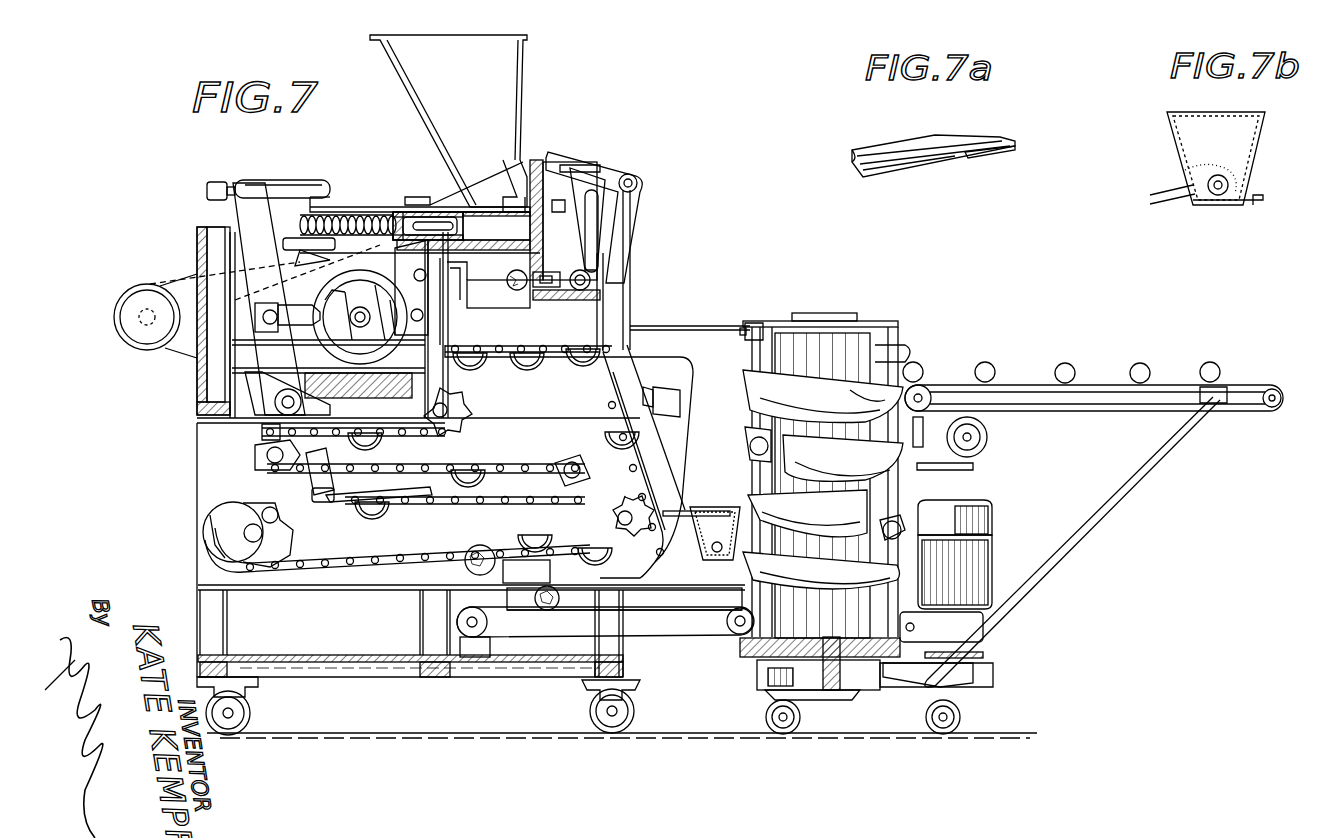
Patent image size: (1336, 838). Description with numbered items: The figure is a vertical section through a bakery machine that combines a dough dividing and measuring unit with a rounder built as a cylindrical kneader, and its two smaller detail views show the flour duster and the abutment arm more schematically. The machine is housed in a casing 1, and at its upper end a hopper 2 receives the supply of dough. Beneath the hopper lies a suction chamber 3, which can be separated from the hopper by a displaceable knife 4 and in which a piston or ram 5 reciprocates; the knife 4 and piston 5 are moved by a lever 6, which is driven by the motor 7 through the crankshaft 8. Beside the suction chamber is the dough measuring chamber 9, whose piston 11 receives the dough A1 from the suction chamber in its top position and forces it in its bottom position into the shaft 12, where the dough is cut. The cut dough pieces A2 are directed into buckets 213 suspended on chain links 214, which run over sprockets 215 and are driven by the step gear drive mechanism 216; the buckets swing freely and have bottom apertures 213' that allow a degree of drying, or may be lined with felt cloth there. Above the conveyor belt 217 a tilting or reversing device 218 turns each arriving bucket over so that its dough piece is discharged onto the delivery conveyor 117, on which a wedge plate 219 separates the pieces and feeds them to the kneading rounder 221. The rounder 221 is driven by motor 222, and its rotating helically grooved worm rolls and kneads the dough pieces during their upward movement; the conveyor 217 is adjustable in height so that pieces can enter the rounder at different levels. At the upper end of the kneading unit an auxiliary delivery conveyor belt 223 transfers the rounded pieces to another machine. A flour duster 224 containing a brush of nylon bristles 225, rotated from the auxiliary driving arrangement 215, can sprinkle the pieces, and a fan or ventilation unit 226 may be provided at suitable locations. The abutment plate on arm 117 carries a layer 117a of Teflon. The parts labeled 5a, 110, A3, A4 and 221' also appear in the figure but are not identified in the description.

In FIG. 7, the casing 1 is at (210, 248).
In FIG. 7, the hopper 2 is at (408, 94).
In FIG. 7, the suction chamber 3 is at (443, 202).
In FIG. 7, the displaceable knife 4 is at (363, 207).
In FIG. 7, the piston or ram 5 is at (417, 210).
In FIG. 7, the actuating lever arm 5a is at (288, 256).
In FIG. 7, the lever 6 is at (226, 200).
In FIG. 7, the motor 7 is at (150, 350).
In FIG. 7, the crankshaft 8 is at (372, 300).
In FIG. 7, the dough measuring chamber 9 is at (620, 255).
In FIG. 7, the piston 11 is at (600, 306).
In FIG. 7, the shaft 12 is at (515, 306).
In FIG. 7, the pivoted frame lever 110 is at (635, 206).
In FIG. 7, the arm with abutment plate 117 is at (420, 299).
In FIG. 7A, the arm with abutment plate 117 is at (865, 156).
In FIG. 7, the Teflon layer 117a is at (496, 226).
In FIG. 7A, the Teflon layer 117a is at (974, 156).
In FIG. 7, the dough A1 is at (501, 286).
In FIG. 7, the dough pieces A2 is at (552, 585).
In FIG. 7, the dough ball A3 is at (933, 478).
In FIG. 7, the dough ball on conveyor A4 is at (995, 370).
In FIG. 7, the buckets 213 is at (519, 396).
In FIG. 7, the bottom apertures 213' is at (432, 427).
In FIG. 7, the chain links 214 is at (426, 555).
In FIG. 7, the sprockets 215 is at (255, 435).
In FIG. 7, the step gear drive mechanism 216 is at (210, 518).
In FIG. 7, the conveyor belt 217 is at (668, 615).
In FIG. 7, the tilting or reversing device 218 is at (559, 539).
In FIG. 7, the wedge plate 219 is at (720, 600).
In FIG. 7, the kneading rounder 221 is at (866, 519).
In FIG. 7, the drum discharge lip 221' is at (924, 357).
In FIG. 7, the motor 222 is at (996, 552).
In FIG. 7, the auxiliary delivery conveyor belt 223 is at (1088, 390).
In FIG. 7, the flour duster 224 is at (718, 510).
In FIG. 7B, the flour duster 224 is at (1250, 136).
In FIG. 7B, the nylon bristles 225 is at (1190, 183).
In FIG. 7, the fan or ventilation unit 226 is at (680, 404).